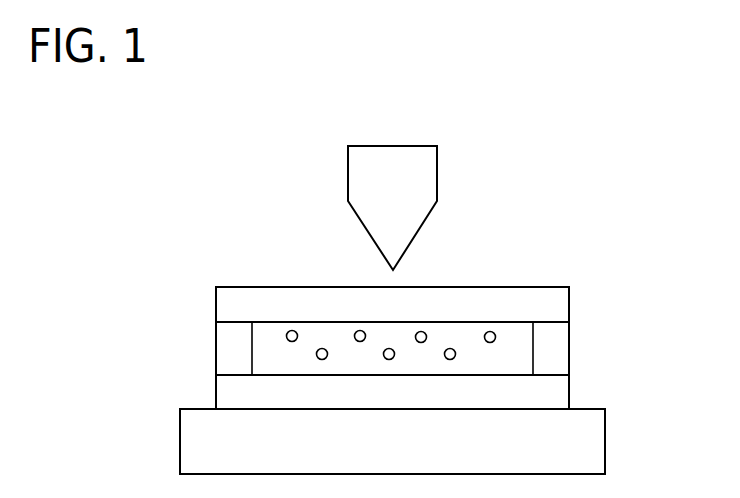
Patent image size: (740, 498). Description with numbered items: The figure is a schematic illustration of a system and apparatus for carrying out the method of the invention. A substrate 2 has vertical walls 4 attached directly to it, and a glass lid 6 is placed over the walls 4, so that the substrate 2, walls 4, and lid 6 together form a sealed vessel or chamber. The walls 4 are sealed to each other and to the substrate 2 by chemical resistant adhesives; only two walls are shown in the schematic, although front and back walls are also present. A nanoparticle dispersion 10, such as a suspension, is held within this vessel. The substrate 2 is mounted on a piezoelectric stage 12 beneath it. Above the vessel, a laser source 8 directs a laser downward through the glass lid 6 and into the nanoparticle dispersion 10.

The substrate 2 is at (557, 392).
The vertical walls 4 is at (557, 342).
The glass lid 6 is at (561, 303).
The laser source 8 is at (422, 169).
The nanoparticle dispersion 10 is at (268, 342).
The piezoelectric stage 12 is at (587, 443).